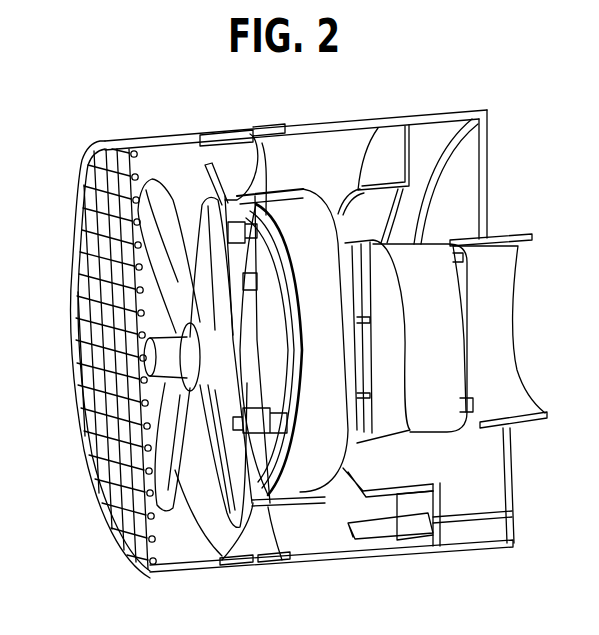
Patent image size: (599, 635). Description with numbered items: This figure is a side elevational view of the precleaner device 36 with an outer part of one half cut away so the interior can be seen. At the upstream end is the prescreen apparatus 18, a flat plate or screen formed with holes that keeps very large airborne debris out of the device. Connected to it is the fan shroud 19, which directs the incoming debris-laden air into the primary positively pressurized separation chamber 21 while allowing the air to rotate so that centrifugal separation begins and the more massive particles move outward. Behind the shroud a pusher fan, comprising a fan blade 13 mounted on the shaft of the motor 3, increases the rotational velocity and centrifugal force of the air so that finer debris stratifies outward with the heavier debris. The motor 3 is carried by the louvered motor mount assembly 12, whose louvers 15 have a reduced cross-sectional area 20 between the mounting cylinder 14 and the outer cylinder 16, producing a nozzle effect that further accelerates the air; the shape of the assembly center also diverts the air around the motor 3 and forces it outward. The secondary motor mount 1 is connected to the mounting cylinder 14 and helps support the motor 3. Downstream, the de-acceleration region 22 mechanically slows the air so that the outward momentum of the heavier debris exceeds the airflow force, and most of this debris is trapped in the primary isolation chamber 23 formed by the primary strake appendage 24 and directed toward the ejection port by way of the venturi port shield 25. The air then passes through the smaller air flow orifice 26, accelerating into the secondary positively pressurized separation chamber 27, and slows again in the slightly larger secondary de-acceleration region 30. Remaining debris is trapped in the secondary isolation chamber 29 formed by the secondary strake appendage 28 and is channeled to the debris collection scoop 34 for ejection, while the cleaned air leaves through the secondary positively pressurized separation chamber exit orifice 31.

The secondary motor mount 1 is at (345, 552).
The motor 3 is at (462, 330).
The louvered motor mount assembly 12 is at (222, 131).
The fan blade 13 is at (228, 522).
The mounting cylinder 14 is at (265, 502).
The louvers 15 is at (200, 160).
The outer cylinder 16 is at (265, 563).
The prescreen apparatus 18 is at (104, 150).
The fan shroud 19 is at (168, 566).
The reduced cross-sectional area 20 is at (235, 170).
The primary positively pressurized separation chamber 21 is at (330, 472).
The de-acceleration region 22 is at (335, 195).
The primary isolation chamber 23 is at (442, 497).
The primary strake appendage 24 is at (373, 183).
The venturi port shield 25 is at (398, 537).
The air flow orifice 26 is at (427, 200).
The secondary positively pressurized separation chamber 27 is at (443, 122).
The secondary strake appendage 28 is at (480, 427).
The secondary isolation chamber 29 is at (453, 243).
The secondary de-acceleration region 30 is at (473, 513).
The secondary positively pressurized separation chamber exit orifice 31 is at (533, 430).
The debris collection scoop 34 is at (510, 517).
The precleaner device 36 is at (117, 573).